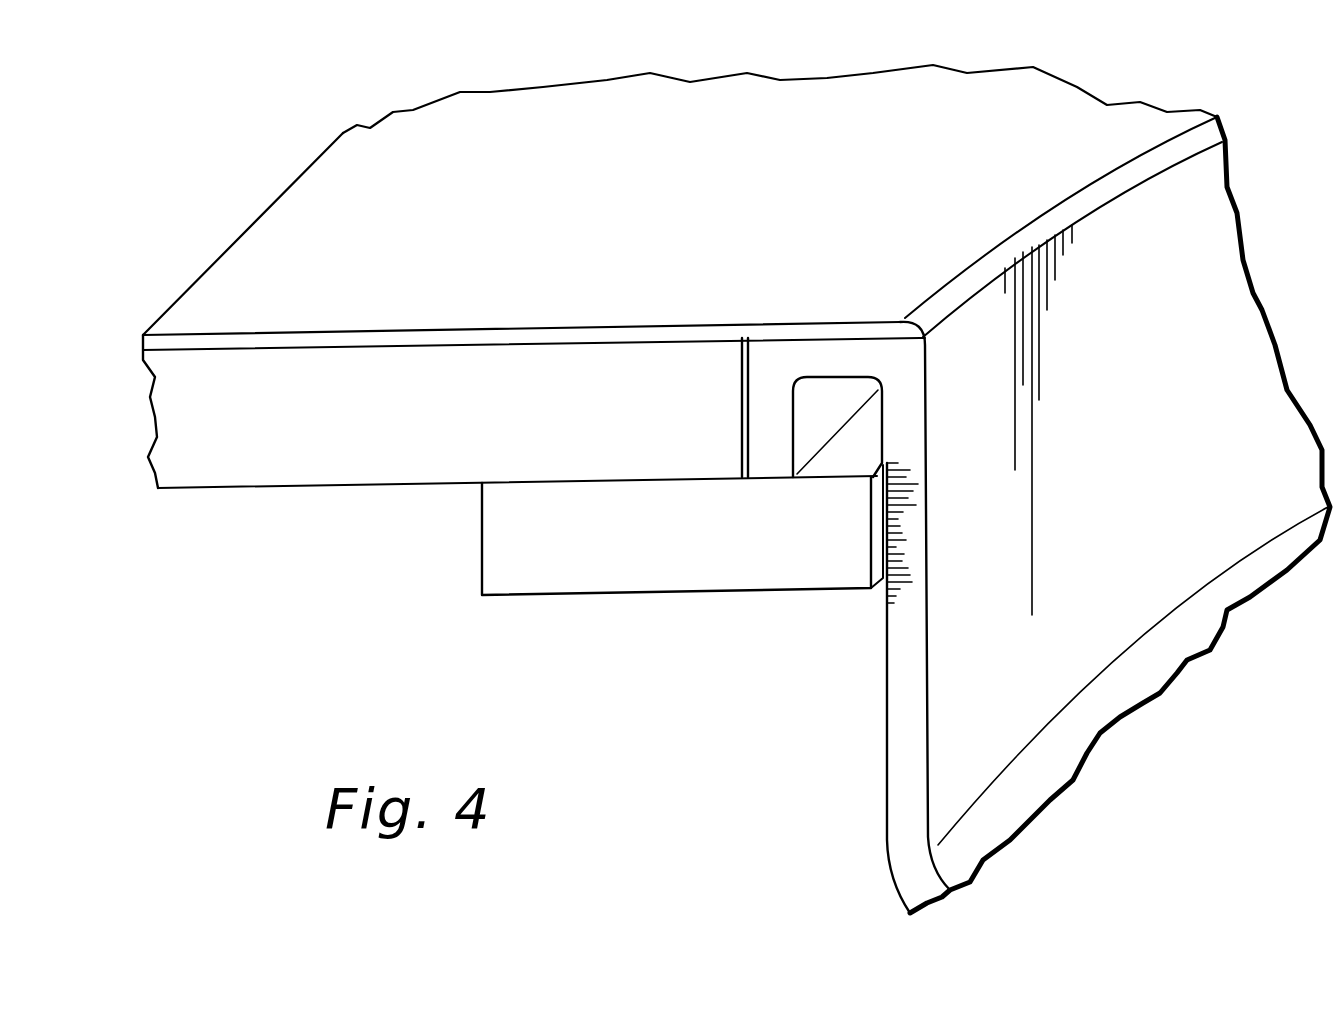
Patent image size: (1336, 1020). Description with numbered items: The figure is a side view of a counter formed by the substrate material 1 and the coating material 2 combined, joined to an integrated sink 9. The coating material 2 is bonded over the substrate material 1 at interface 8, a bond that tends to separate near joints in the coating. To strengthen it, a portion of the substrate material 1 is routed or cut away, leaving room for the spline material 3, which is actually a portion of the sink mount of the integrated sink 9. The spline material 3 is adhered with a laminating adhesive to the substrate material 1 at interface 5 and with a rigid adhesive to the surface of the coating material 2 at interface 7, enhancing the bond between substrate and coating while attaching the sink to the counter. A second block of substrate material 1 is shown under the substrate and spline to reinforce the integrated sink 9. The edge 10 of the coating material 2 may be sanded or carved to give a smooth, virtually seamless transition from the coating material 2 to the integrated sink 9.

The substrate material 1 is at (447, 447).
The coating material 2 is at (245, 263).
The spline material 3 is at (855, 360).
The interface 5 is at (738, 391).
The interface 7 is at (791, 335).
The interface 8 is at (250, 352).
The integrated sink 9 is at (912, 512).
The edge 10 is at (1013, 233).